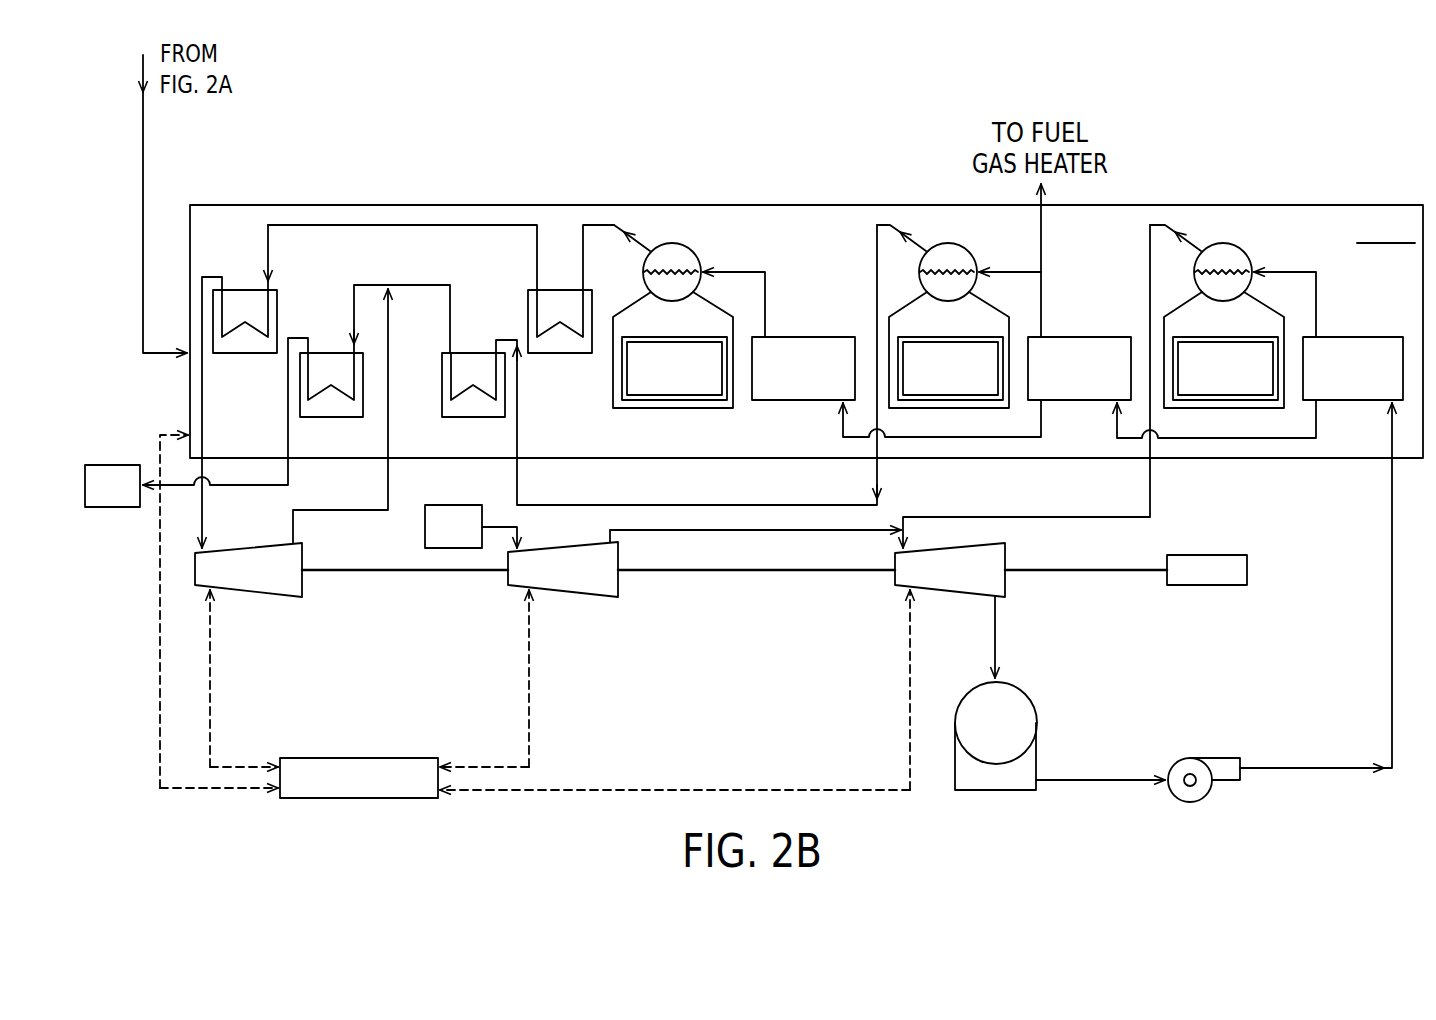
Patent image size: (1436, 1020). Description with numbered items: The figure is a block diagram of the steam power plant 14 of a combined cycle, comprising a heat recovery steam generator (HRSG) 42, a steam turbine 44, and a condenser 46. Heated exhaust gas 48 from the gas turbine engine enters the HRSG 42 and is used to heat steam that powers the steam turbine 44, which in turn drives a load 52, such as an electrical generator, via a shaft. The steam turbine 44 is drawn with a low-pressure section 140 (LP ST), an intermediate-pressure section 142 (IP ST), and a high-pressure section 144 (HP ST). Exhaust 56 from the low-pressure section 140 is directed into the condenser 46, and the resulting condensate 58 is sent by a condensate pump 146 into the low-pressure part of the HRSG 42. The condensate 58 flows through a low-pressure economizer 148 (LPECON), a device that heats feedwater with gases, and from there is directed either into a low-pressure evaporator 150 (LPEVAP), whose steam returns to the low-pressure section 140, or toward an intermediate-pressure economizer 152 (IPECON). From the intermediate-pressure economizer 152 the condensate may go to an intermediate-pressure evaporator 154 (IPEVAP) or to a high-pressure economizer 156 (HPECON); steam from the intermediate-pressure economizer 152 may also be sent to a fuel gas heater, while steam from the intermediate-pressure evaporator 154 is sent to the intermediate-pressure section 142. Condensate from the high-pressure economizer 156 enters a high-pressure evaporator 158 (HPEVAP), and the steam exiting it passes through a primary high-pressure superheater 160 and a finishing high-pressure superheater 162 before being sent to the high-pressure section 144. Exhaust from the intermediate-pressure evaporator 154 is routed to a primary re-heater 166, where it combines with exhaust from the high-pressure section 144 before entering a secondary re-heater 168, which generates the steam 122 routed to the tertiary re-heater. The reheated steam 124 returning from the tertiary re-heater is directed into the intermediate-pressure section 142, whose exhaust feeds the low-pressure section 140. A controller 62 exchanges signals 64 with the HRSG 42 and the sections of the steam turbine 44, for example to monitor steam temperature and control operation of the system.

The steam power plant 14 is at (1321, 140).
The heat recovery steam generator (HRSG) 42 is at (804, 205).
The steam turbine 44 is at (646, 587).
The condenser 46 is at (1037, 745).
The exhaust gas 48 is at (145, 190).
The load 52 is at (1208, 555).
The exhaust 56 is at (998, 628).
The condensate 58 is at (1391, 592).
The controller 62 is at (362, 798).
The signals 64 is at (160, 676).
The steam 122 is at (128, 497).
The reheated steam 124 is at (469, 540).
The low-pressure section 140 is at (952, 590).
The intermediate-pressure section 142 is at (565, 590).
The high-pressure section 144 is at (252, 590).
The condensate pump 146 is at (1203, 800).
The low-pressure economizer 148 is at (1352, 336).
The low-pressure evaporator 150 is at (1258, 303).
The intermediate-pressure economizer 152 is at (1078, 336).
The intermediate-pressure evaporator 154 is at (983, 303).
The high-pressure economizer 156 is at (803, 336).
The high-pressure evaporator 158 is at (707, 303).
The primary high-pressure superheater 160 is at (558, 354).
The finishing high-pressure superheater 162 is at (243, 354).
The primary re-heater 166 is at (442, 382).
The secondary re-heater 168 is at (310, 418).